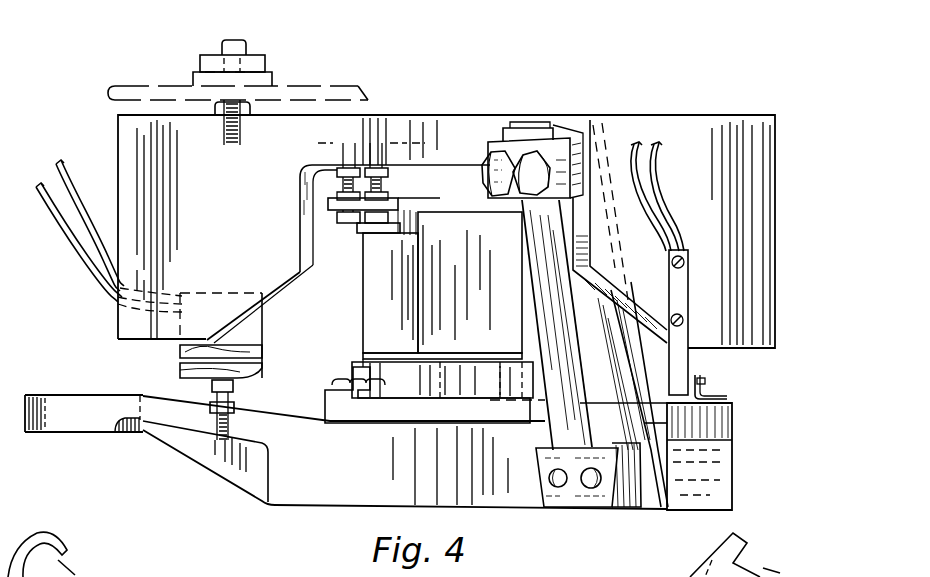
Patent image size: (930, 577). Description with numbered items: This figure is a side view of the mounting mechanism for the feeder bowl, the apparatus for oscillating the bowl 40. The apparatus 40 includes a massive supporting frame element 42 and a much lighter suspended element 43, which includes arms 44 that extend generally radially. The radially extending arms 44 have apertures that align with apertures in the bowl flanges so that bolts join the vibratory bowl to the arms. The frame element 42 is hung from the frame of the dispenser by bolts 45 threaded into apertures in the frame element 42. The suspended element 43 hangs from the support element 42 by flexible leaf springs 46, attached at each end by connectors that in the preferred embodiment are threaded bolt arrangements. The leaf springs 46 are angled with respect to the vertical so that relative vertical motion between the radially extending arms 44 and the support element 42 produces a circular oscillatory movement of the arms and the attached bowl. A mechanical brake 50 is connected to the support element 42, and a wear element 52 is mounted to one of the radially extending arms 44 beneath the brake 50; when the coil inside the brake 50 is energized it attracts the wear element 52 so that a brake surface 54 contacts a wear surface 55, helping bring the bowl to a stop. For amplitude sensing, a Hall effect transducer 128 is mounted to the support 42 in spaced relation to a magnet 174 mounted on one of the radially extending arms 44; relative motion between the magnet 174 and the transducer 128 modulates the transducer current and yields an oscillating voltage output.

The apparatus for oscillating the bowl 40 is at (405, 246).
The supporting frame element 42 is at (226, 214).
The suspended element 43 is at (305, 508).
The radially extending arms 44 is at (87, 433).
The bolts 45 is at (250, 48).
The leaf springs 46 is at (543, 353).
The mechanical brake 50 is at (287, 334).
The wear element 52 is at (240, 380).
The brake surface 54 is at (182, 346).
The wear surface 55 is at (262, 369).
The Hall effect transducer 128 is at (679, 268).
The magnet 174 is at (705, 375).